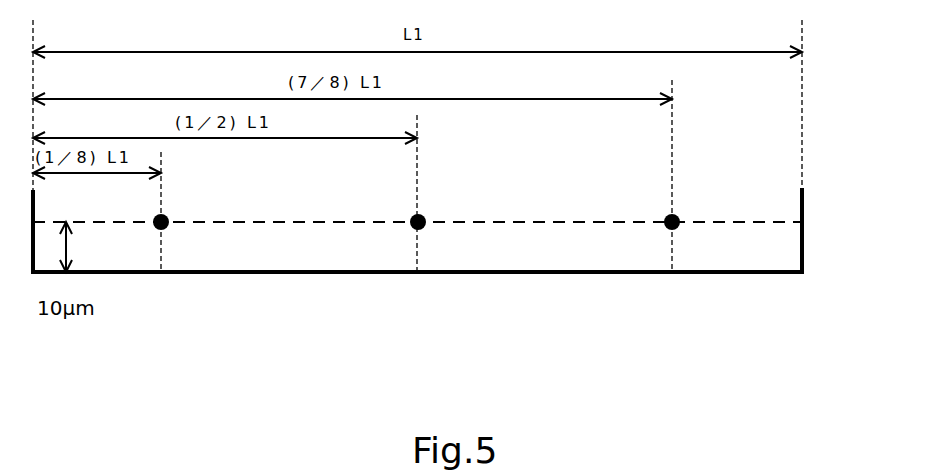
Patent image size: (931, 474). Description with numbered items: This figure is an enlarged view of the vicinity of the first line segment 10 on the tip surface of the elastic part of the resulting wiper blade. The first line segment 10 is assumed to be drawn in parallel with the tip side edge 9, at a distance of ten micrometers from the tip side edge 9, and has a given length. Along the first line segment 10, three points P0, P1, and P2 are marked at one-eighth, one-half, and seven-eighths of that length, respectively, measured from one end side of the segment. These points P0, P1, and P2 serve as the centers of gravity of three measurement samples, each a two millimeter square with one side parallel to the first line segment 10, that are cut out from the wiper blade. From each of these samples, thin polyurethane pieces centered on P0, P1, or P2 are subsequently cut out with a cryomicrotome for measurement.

The tip side edge 9 is at (322, 272).
The first line segment 10 is at (762, 220).
The center of gravity point P0 is at (163, 226).
The center of gravity point P1 is at (420, 226).
The center of gravity point P2 is at (674, 226).